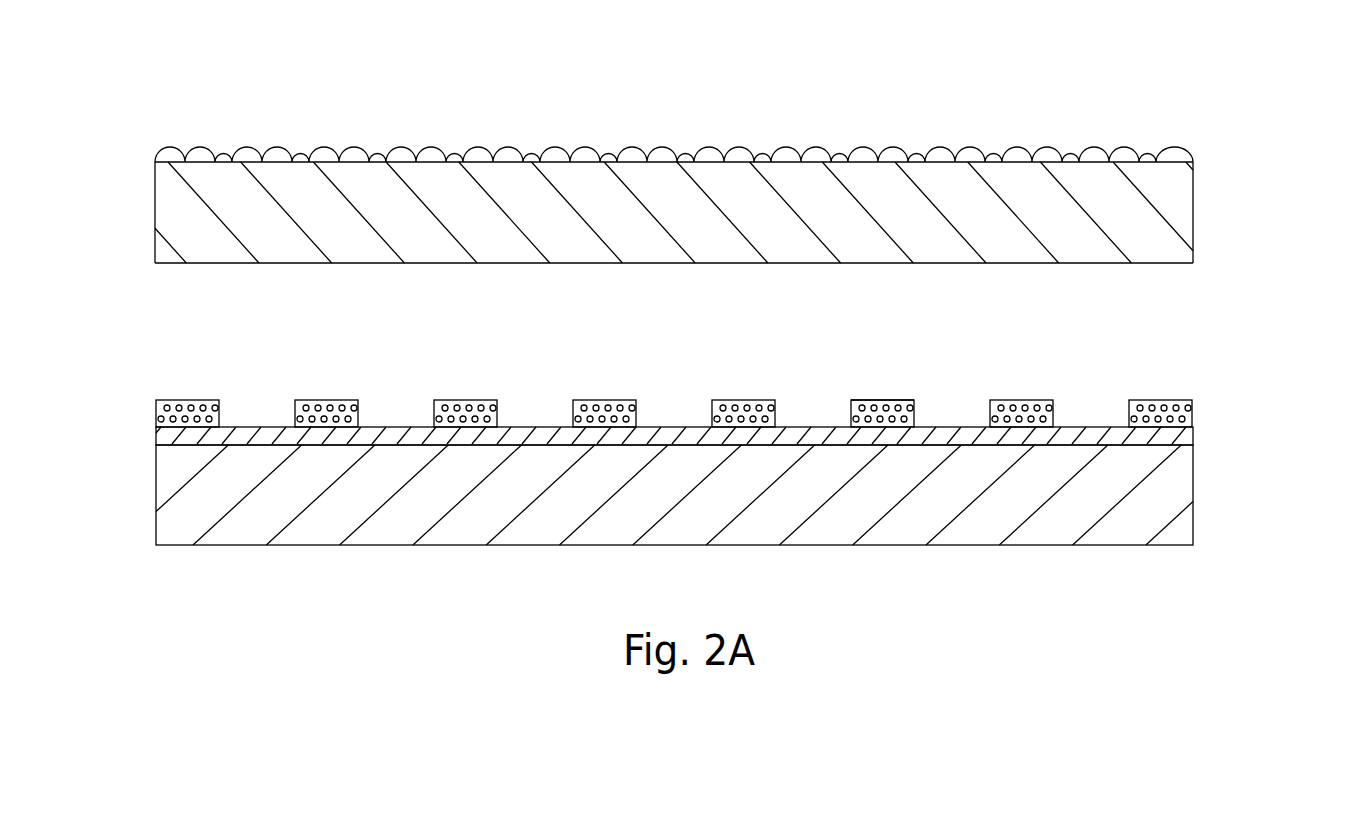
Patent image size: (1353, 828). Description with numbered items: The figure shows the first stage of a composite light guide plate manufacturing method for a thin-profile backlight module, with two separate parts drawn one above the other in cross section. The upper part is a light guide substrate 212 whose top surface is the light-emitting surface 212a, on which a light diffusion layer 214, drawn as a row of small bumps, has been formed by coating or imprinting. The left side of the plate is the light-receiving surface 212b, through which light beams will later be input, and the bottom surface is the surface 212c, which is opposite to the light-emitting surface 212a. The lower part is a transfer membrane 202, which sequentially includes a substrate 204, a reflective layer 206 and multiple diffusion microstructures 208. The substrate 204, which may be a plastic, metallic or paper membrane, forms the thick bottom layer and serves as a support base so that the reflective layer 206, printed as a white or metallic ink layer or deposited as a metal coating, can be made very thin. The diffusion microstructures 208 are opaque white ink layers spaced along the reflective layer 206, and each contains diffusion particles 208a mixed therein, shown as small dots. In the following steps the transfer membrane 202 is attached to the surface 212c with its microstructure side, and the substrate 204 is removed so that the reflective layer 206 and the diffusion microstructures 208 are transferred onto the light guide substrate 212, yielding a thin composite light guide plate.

The transfer membrane 202 is at (750, 436).
The substrate 204 is at (1175, 490).
The reflective layer 206 is at (1175, 432).
The diffusion microstructures 208 is at (709, 377).
The diffusion particles 208a is at (888, 398).
The light guide substrate 212 is at (660, 208).
The light-emitting surface 212a is at (330, 160).
The light-receiving surface 212b is at (152, 220).
The surface 212c is at (506, 263).
The light diffusion layer 214 is at (1180, 152).